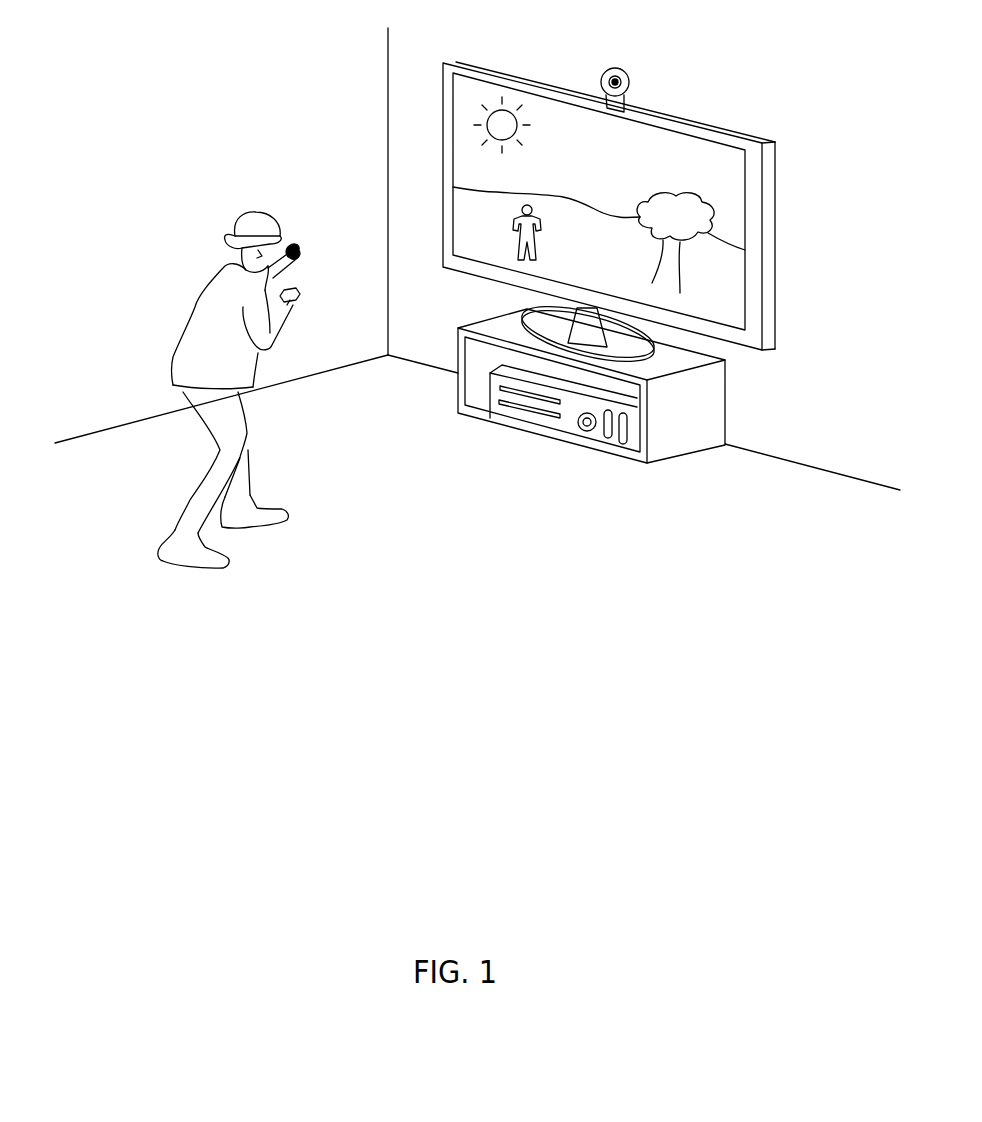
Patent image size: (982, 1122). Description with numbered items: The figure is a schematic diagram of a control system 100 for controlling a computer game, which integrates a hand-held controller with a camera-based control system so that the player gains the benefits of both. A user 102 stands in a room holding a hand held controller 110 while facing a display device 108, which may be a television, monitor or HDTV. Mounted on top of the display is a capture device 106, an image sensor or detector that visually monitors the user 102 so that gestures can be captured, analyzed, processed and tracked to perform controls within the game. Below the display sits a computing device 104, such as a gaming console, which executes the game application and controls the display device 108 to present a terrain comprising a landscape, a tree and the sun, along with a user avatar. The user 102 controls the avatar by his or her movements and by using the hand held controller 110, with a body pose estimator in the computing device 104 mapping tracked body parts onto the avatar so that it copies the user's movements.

The control system 100 is at (477, 259).
The user 102 is at (197, 300).
The computing device 104 is at (557, 421).
The capture device 106 is at (617, 68).
The display device 108 is at (777, 226).
The hand held controller 110 is at (300, 295).